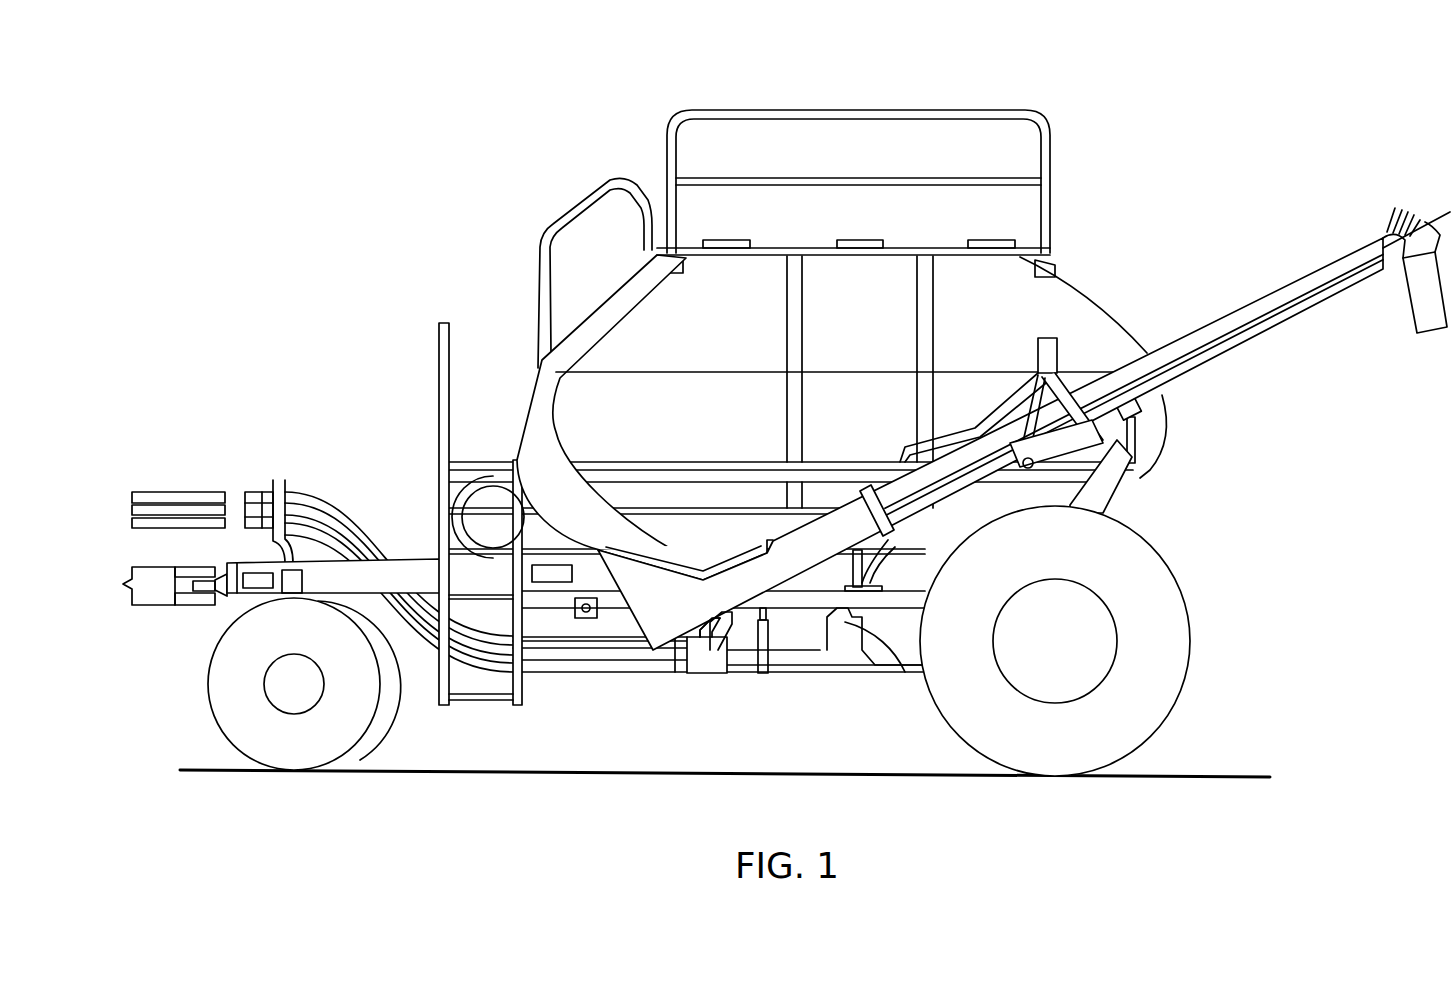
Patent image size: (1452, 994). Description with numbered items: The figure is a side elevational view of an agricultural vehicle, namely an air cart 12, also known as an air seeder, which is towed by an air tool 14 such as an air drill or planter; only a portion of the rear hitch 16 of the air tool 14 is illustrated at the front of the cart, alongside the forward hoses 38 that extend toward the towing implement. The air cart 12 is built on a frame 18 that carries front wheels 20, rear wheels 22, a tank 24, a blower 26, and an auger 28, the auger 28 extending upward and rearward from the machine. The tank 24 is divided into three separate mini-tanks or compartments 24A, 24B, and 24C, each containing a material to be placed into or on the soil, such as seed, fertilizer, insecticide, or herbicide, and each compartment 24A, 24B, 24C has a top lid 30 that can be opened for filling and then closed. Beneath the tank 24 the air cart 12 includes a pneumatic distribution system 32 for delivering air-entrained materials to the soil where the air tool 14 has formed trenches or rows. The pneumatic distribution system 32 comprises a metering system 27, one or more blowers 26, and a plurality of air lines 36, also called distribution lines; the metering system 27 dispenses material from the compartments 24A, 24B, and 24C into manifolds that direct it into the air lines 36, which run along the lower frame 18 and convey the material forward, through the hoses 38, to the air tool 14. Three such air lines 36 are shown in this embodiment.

The air cart 12 is at (1096, 223).
The air tool 14 is at (136, 605).
The rear hitch 16 is at (160, 606).
The frame 18 is at (426, 559).
The front wheels 20 is at (396, 729).
The rear wheels 22 is at (1189, 612).
The tank 24 is at (1112, 318).
The first compartment 24A is at (753, 382).
The second compartment 24B is at (890, 382).
The third compartment 24C is at (988, 309).
The blower 26 is at (520, 476).
The metering system 27 is at (708, 672).
The auger 28 is at (1342, 255).
The top lid 30 is at (720, 240).
The pneumatic distribution system 32 is at (696, 674).
The air lines 36 is at (553, 678).
The hoses 38 is at (145, 494).